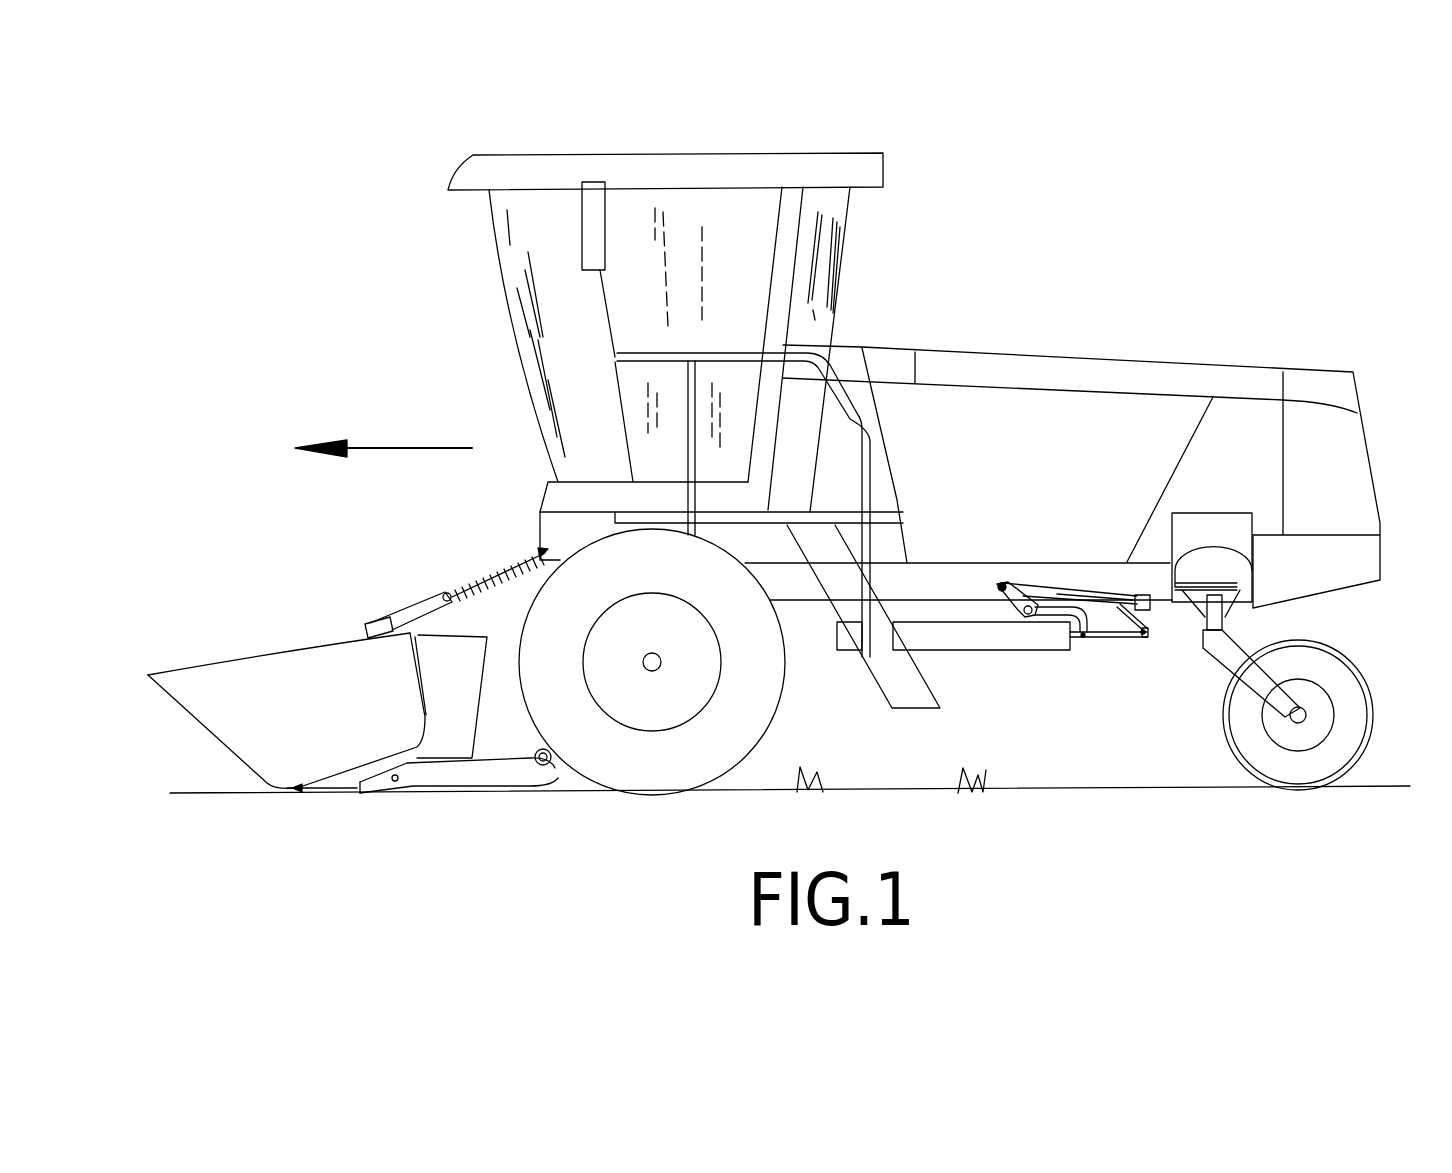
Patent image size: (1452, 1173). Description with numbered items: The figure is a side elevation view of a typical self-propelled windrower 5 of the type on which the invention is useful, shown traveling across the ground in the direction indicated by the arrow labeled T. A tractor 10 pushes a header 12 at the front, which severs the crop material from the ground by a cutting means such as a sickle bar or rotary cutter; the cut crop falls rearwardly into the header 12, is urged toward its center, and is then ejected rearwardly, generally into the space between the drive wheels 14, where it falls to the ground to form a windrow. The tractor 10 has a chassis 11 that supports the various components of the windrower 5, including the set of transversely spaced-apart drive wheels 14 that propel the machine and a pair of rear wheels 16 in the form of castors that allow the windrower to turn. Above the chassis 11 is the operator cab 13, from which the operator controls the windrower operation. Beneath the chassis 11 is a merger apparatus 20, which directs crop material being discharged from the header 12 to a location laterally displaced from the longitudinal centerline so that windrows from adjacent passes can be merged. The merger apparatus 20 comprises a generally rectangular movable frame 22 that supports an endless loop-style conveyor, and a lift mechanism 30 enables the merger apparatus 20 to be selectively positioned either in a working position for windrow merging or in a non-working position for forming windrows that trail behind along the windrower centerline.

The self-propelled windrower 5 is at (302, 340).
The tractor 10 is at (945, 352).
The chassis 11 is at (1067, 577).
The header 12 is at (300, 613).
The operator cab 13 is at (843, 250).
The drive wheels 14 is at (650, 760).
The rear wheels 16 is at (1327, 652).
The merger apparatus 20 is at (1032, 708).
The movable frame 22 is at (970, 640).
The lift mechanism 30 is at (1108, 660).